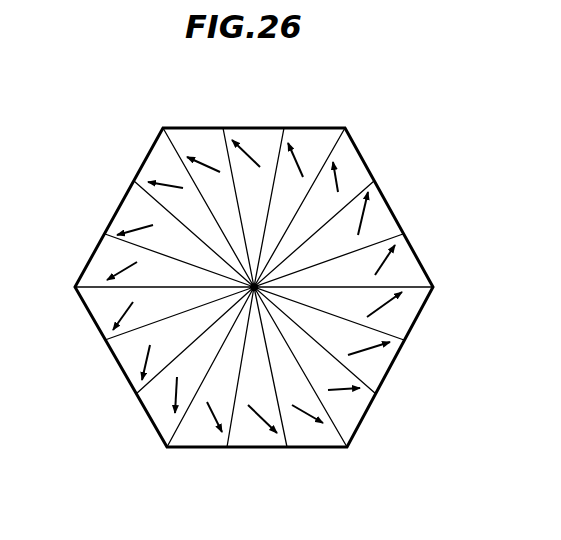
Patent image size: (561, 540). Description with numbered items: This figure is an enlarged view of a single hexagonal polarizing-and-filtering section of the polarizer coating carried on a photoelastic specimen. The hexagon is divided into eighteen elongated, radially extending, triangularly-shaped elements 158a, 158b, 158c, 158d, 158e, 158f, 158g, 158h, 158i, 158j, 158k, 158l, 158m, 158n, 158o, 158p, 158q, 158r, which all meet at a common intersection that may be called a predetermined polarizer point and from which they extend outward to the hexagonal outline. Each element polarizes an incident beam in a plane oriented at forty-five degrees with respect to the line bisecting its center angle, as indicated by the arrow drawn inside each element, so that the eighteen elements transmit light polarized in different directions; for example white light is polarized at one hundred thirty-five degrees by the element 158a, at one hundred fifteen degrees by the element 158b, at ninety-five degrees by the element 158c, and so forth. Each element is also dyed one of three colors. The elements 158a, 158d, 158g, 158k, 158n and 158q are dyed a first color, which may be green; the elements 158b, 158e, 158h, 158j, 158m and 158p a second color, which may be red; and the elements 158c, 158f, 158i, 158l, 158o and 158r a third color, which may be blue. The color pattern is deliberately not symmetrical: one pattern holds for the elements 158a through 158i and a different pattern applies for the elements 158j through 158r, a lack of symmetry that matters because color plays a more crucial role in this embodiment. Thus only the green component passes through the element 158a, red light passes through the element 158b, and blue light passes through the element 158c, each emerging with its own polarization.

The triangularly-shaped element 158a is at (263, 133).
The triangularly-shaped element 158b is at (313, 140).
The triangularly-shaped element 158c is at (356, 172).
The triangularly-shaped element 158d is at (380, 222).
The triangularly-shaped element 158e is at (405, 260).
The triangularly-shaped element 158f is at (408, 312).
The triangularly-shaped element 158g is at (378, 363).
The triangularly-shaped element 158h is at (355, 408).
The triangularly-shaped element 158i is at (313, 433).
The triangularly-shaped element 158j is at (253, 435).
The triangularly-shaped element 158k is at (200, 438).
The triangularly-shaped element 158l is at (163, 413).
The triangularly-shaped element 158m is at (132, 358).
The triangularly-shaped element 158n is at (102, 305).
The triangularly-shaped element 158o is at (112, 252).
The triangularly-shaped element 158p is at (130, 208).
The triangularly-shaped element 158q is at (160, 158).
The triangularly-shaped element 158r is at (202, 140).